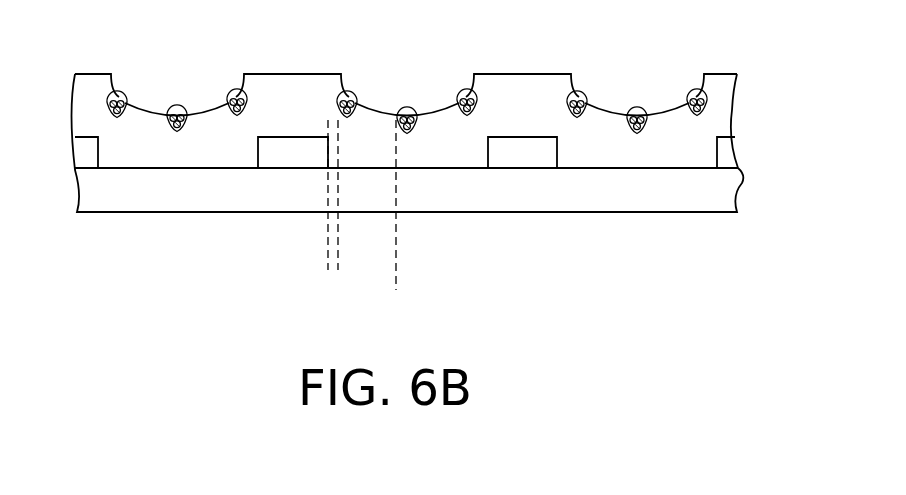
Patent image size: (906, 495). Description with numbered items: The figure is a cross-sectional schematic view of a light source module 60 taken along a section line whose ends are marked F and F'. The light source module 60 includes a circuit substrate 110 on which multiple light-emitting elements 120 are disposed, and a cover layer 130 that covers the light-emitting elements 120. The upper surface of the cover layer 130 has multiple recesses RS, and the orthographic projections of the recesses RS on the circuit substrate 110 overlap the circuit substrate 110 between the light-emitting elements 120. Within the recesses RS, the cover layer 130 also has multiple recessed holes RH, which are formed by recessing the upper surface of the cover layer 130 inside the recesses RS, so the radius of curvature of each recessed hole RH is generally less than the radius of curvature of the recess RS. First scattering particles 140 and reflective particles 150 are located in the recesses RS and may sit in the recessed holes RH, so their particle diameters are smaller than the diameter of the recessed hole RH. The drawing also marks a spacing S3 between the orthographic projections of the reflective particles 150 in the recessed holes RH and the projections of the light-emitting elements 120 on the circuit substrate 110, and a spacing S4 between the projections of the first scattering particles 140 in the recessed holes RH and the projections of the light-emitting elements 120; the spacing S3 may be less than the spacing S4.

The circuit substrate 110 is at (722, 192).
The light-emitting elements 120 is at (722, 150).
The cover layer 130 is at (722, 115).
The first scattering particles 140 is at (412, 113).
The reflective particles 150 is at (458, 97).
The recesses RS is at (171, 69).
The recessed holes RH is at (432, 137).
The spacing S3 is at (346, 257).
The spacing S4 is at (388, 285).
The section line end F is at (62, 236).
The section line end F' is at (753, 236).
The light source module 60 is at (793, 312).